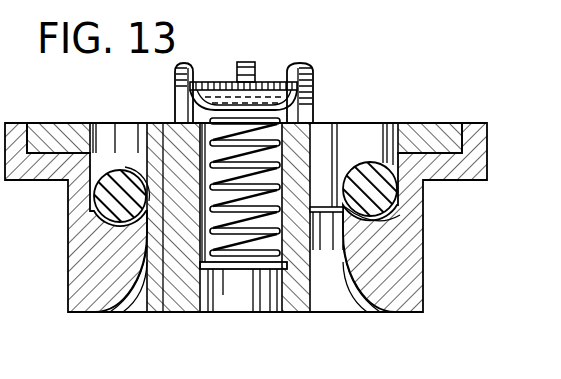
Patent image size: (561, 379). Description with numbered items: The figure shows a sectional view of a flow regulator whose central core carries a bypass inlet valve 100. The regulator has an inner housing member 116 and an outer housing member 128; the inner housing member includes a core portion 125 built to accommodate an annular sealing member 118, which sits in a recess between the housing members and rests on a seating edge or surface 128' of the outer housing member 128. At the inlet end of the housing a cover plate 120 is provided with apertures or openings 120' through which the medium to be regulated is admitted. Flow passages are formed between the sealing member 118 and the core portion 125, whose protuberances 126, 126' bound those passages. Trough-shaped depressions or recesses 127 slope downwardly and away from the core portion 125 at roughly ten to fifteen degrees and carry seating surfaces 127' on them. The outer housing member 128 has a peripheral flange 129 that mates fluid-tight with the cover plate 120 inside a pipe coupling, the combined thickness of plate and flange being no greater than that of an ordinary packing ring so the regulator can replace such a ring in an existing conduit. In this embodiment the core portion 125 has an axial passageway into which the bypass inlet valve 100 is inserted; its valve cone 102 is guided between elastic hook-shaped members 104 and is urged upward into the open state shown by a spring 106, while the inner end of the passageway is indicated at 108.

The bypass inlet valve 100 is at (312, 47).
The valve cone 102 is at (265, 85).
The hook-shaped members 104 is at (178, 88).
The spring 106 is at (232, 313).
The inner end of the passageway 108 is at (278, 312).
The inner housing member 116 is at (433, 82).
The annular sealing member 118 is at (110, 196).
The cover plate 120 is at (49, 115).
The apertures or openings 120' is at (115, 121).
The core portion 125 is at (180, 291).
The protuberance 126 is at (352, 142).
The protuberance 126' is at (389, 130).
The trough-shaped depressions or recesses 127 is at (250, 209).
The seating surfaces 127' is at (402, 227).
The outer housing member 128 is at (414, 278).
The seating edge or surface 128' is at (290, 247).
The peripheral flange 129 is at (473, 140).